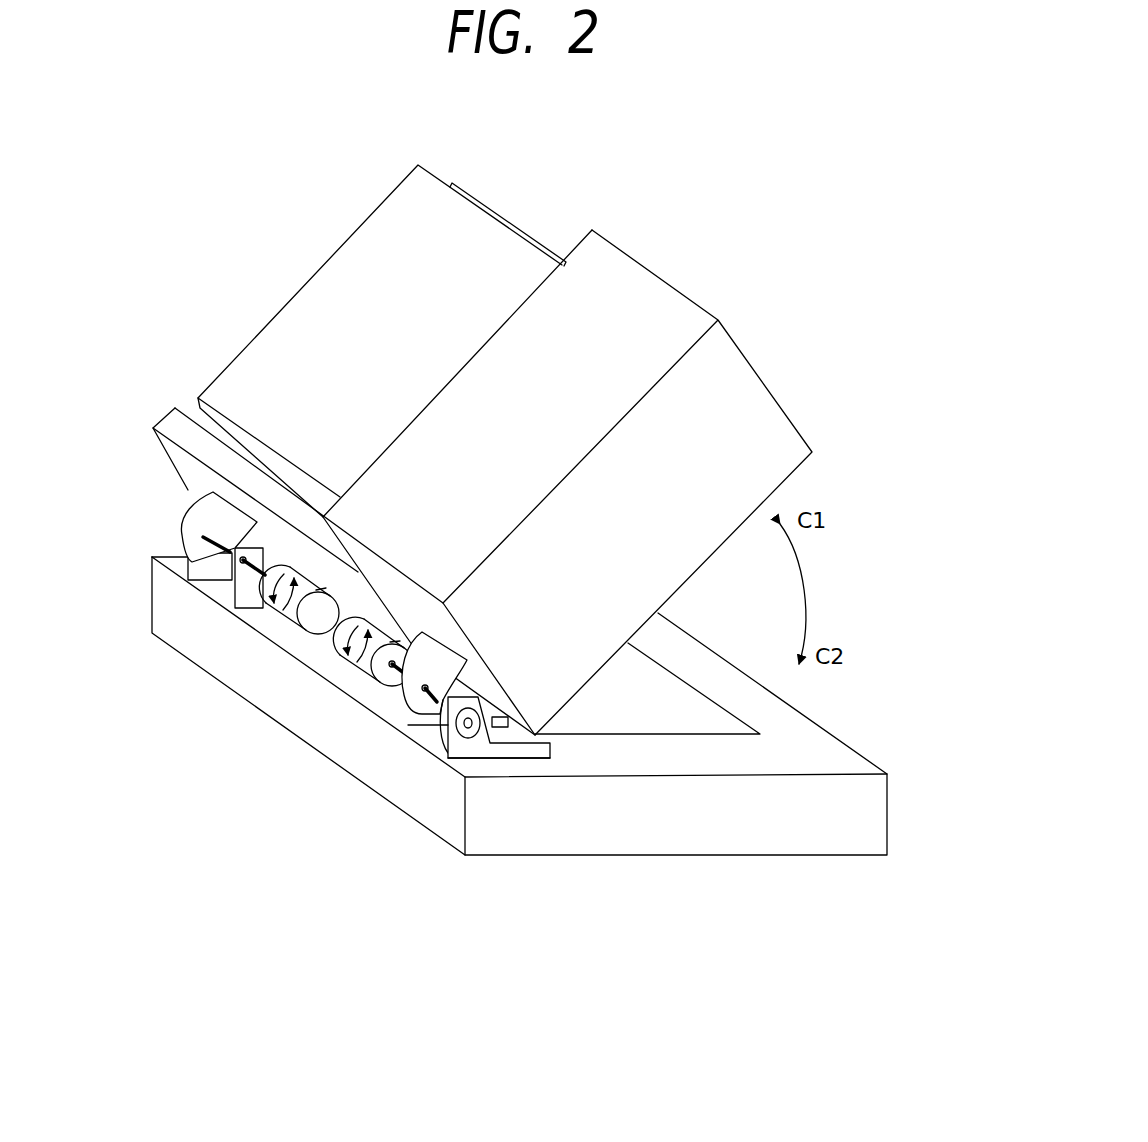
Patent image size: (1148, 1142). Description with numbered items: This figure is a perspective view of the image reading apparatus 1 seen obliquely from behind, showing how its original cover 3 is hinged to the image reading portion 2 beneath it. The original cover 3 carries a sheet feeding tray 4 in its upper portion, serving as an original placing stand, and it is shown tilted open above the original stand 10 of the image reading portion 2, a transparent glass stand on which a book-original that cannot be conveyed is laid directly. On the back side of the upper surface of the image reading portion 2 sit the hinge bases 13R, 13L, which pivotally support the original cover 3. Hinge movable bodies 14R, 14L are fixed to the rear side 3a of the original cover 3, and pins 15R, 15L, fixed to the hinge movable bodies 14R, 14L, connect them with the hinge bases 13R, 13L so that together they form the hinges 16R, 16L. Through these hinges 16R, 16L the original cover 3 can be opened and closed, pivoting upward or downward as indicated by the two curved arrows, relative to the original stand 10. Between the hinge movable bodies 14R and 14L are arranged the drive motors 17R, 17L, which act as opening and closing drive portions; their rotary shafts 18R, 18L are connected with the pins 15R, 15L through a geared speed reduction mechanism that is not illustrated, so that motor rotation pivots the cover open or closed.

The image reading apparatus 1 is at (451, 409).
The image reading portion 2 is at (540, 740).
The original cover 3 is at (451, 450).
The rear side 3a is at (188, 470).
The sheet feeding tray 4 is at (495, 203).
The original stand 10 is at (705, 720).
The hinge base 13L is at (528, 752).
The hinge base 13R is at (213, 592).
The hinge movable body 14L is at (462, 682).
The hinge movable body 14R is at (208, 513).
The pin 15L is at (423, 707).
The pin 15R is at (188, 555).
The hinge 16L is at (495, 760).
The hinge 16R is at (168, 533).
The drive motor 17L is at (358, 660).
The drive motor 17R is at (282, 613).
The rotary shaft 18L is at (392, 668).
The rotary shaft 18R is at (241, 567).